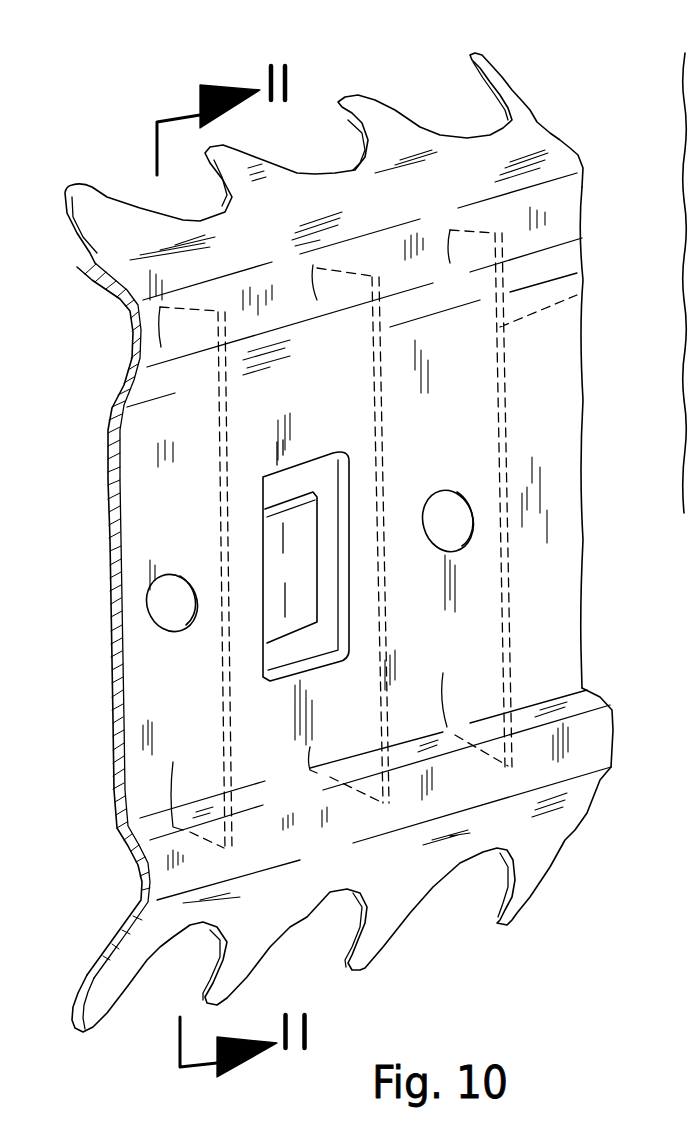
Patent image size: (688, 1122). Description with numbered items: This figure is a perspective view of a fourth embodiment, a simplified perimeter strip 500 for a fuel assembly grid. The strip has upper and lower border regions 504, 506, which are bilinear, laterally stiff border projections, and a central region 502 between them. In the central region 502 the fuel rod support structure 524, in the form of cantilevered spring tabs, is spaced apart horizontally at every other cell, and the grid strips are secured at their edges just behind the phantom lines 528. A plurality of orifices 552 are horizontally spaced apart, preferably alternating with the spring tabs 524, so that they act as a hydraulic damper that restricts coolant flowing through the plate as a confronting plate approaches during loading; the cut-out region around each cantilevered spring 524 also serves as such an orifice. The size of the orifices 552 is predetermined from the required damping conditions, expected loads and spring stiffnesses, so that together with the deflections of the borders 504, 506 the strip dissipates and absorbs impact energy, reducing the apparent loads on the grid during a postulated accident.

The simplified perimeter strip 500 is at (389, 110).
The central region 502 is at (540, 384).
The upper border region 504 is at (550, 147).
The lower border region 506 is at (567, 812).
The phantom lines 528 is at (573, 293).
The fuel rod support structure 524 is at (302, 537).
The orifices 552 is at (158, 603).